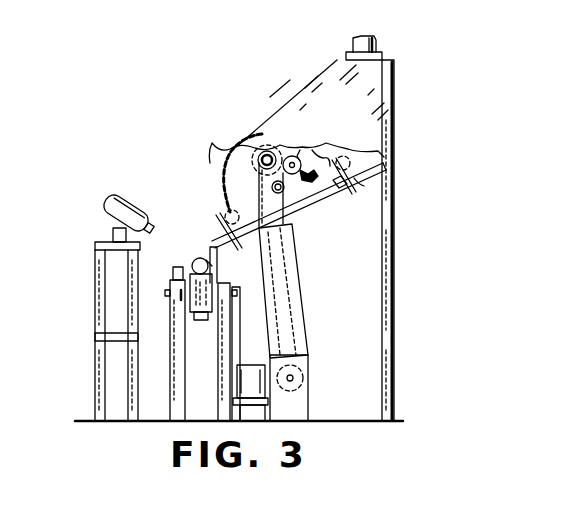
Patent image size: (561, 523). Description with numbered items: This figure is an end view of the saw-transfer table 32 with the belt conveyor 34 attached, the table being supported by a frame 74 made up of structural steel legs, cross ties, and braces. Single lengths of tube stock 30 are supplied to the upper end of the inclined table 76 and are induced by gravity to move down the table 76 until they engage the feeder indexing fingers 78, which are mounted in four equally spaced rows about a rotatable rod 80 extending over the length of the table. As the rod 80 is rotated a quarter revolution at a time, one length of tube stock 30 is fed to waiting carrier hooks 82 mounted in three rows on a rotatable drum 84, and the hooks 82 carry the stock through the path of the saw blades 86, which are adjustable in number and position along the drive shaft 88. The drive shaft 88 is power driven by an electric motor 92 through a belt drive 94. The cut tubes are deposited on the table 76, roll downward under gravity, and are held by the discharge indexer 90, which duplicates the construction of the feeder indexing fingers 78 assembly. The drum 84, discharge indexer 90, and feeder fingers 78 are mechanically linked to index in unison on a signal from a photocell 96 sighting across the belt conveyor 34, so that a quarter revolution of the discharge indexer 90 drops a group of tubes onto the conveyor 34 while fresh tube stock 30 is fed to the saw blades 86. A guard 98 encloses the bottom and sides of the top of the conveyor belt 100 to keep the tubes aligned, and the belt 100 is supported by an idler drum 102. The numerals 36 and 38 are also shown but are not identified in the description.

The tube stock 30 is at (346, 158).
The saw-transfer table 32 is at (232, 54).
The belt conveyor 34 is at (200, 330).
The inclined plate 36 is at (299, 101).
The top fitting 38 is at (356, 40).
The frame 74 is at (404, 303).
The inclined table 76 is at (378, 167).
The feeder indexing fingers 78 is at (354, 186).
The rotatable rod 80 is at (338, 188).
The carrier hooks 82 is at (298, 158).
The drum 84 is at (258, 171).
The saw blades 86 is at (258, 142).
The drive shaft 88 is at (256, 146).
The discharge indexer 90 is at (210, 222).
The electric motor 92 is at (252, 364).
The belt drive 94 is at (306, 311).
The photocell 96 is at (104, 208).
The guard 98 is at (188, 268).
The conveyor belt 100 is at (234, 256).
The idler drum 102 is at (238, 286).